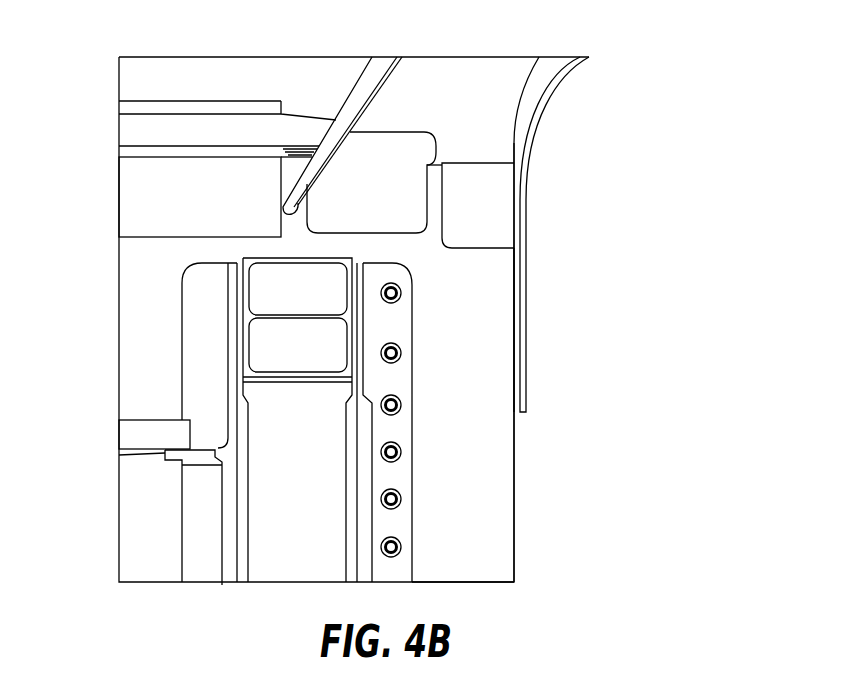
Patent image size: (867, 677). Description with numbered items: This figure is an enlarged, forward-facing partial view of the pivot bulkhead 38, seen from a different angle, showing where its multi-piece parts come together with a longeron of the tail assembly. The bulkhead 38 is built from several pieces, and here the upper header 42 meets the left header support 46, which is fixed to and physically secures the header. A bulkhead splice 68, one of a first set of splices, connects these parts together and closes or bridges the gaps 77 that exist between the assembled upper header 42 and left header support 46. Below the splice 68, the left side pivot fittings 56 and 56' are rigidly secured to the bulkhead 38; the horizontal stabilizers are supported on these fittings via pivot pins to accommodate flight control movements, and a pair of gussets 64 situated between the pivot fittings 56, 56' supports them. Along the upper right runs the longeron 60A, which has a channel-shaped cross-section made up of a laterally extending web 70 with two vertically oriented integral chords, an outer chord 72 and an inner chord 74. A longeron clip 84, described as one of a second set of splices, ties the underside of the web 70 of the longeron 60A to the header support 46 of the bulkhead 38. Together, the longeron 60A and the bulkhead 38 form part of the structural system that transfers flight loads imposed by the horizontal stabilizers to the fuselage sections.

The pivot bulkhead 38 is at (520, 507).
The upper header 42 is at (199, 69).
The left header support 46 is at (475, 458).
The left side pivot fitting 56 is at (420, 422).
The left side pivot fitting 56' is at (153, 424).
The longeron 60A is at (557, 126).
The gussets 64 is at (312, 304).
The bulkhead splice 68 is at (209, 206).
The web 70 is at (485, 57).
The outer chord 72 is at (550, 73).
The inner chord 74 is at (356, 90).
The gaps 77 is at (437, 158).
The longeron clip 84 is at (386, 194).